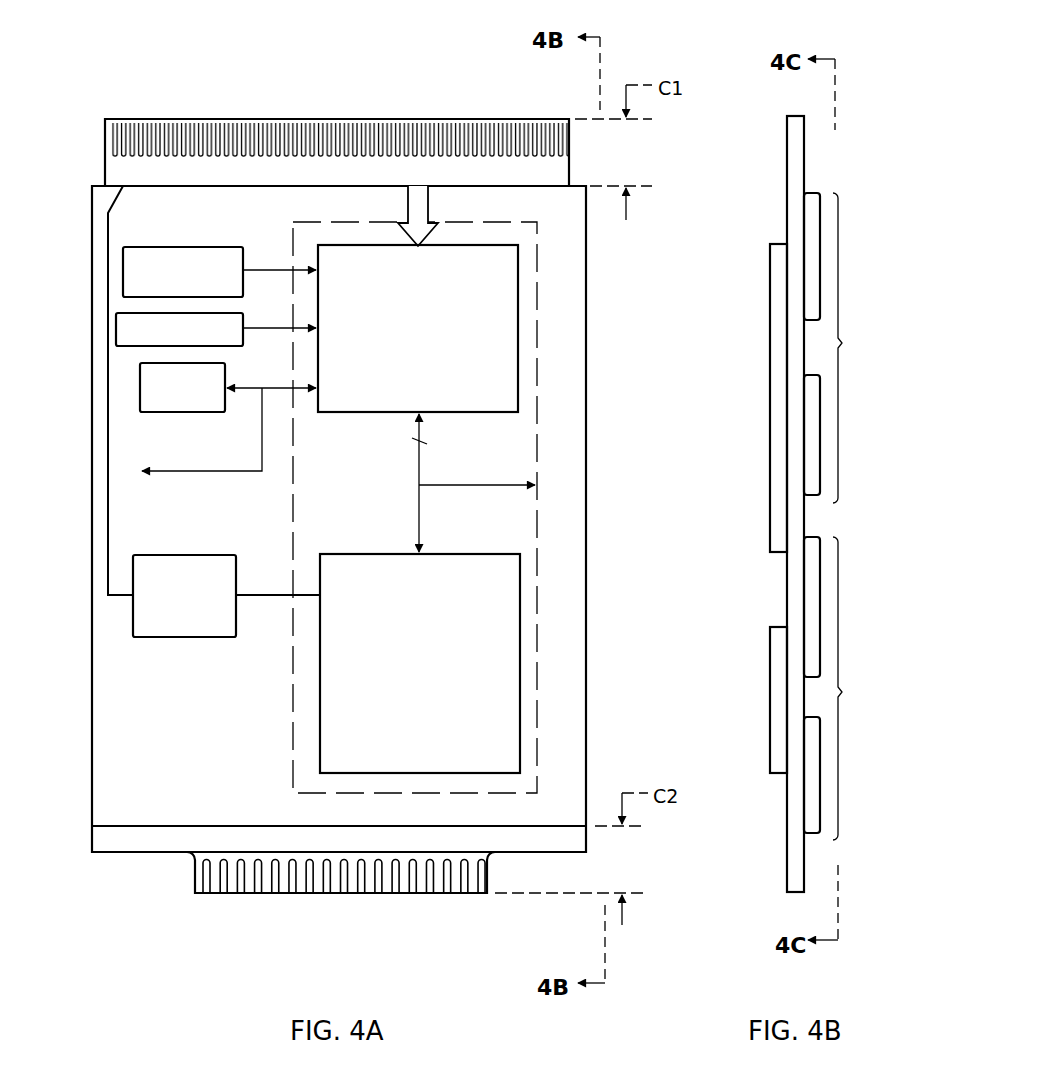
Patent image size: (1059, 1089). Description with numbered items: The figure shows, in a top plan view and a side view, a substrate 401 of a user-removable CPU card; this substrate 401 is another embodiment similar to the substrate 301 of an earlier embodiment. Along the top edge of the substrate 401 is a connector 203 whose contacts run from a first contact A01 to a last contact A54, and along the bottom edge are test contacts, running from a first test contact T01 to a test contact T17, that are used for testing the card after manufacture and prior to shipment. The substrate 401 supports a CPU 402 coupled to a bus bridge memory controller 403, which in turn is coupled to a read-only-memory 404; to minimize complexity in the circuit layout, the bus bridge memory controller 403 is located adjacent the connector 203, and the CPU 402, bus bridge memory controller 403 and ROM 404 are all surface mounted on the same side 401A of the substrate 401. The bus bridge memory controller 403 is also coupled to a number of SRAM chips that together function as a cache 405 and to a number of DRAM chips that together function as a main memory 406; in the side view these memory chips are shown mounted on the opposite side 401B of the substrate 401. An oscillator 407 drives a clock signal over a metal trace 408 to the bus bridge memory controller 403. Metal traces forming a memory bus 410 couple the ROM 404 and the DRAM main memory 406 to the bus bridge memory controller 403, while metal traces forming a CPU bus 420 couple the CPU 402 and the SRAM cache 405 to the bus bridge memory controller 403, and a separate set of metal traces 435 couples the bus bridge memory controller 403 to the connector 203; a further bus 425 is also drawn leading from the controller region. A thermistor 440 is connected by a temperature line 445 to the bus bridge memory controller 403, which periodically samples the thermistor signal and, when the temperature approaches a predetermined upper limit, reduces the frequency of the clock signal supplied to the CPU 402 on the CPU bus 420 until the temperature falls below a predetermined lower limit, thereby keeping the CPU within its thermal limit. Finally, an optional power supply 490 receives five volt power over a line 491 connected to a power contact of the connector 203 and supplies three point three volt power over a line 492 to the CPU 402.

In FIG. 4A, the connector 203 is at (102, 133).
In FIG. 4A, the substrate 301 is at (577, 506).
In FIG. 4A, the substrate 401 is at (106, 800).
In FIG. 4B, the substrate 401 is at (790, 184).
In FIG. 4A, the side of substrate 401A is at (208, 742).
In FIG. 4B, the side of substrate 401A is at (786, 592).
In FIG. 4B, the opposite side of substrate 401B is at (806, 527).
In FIG. 4A, the CPU 402 is at (406, 757).
In FIG. 4B, the CPU 402 is at (772, 712).
In FIG. 4A, the bus bridge memory controller 403 is at (404, 387).
In FIG. 4B, the bus bridge memory controller 403 is at (770, 447).
In FIG. 4A, the read-only-memory (ROM) 404 is at (142, 414).
In FIG. 4B, the cache 405 is at (861, 348).
In FIG. 4B, the main memory 406 is at (861, 688).
In FIG. 4A, the oscillator 407 is at (200, 245).
In FIG. 4A, the metal trace 408 is at (278, 273).
In FIG. 4A, the memory bus 410 is at (293, 383).
In FIG. 4A, the CPU bus 420 is at (416, 457).
In FIG. 4A, the SRAM bus 425 is at (520, 438).
In FIG. 4A, the metal traces 435 is at (425, 209).
In FIG. 4A, the thermistor 440 is at (116, 335).
In FIG. 4A, the temperature line 445 is at (266, 330).
In FIG. 4A, the power supply 490 is at (222, 558).
In FIG. 4A, the line 491 is at (112, 541).
In FIG. 4A, the line 492 is at (271, 598).
In FIG. 4A, the connector pin A01 is at (112, 120).
In FIG. 4A, the connector pin A54 is at (557, 120).
In FIG. 4A, the test contact T01 is at (207, 894).
In FIG. 4A, the test contact T17 is at (473, 894).